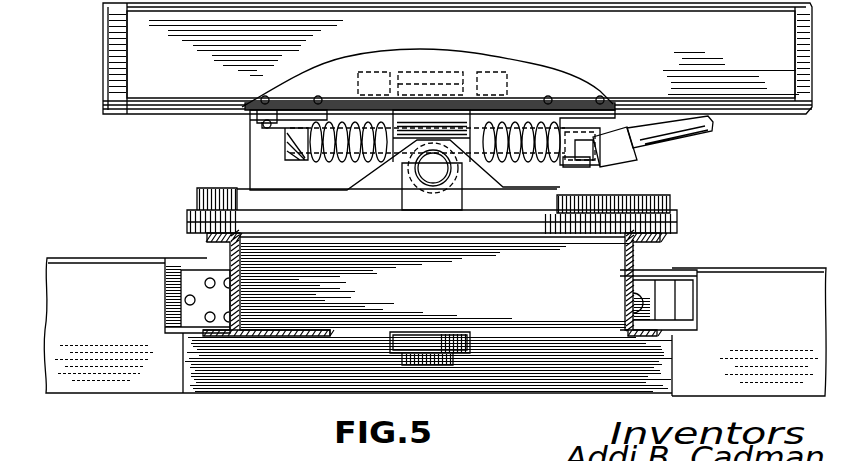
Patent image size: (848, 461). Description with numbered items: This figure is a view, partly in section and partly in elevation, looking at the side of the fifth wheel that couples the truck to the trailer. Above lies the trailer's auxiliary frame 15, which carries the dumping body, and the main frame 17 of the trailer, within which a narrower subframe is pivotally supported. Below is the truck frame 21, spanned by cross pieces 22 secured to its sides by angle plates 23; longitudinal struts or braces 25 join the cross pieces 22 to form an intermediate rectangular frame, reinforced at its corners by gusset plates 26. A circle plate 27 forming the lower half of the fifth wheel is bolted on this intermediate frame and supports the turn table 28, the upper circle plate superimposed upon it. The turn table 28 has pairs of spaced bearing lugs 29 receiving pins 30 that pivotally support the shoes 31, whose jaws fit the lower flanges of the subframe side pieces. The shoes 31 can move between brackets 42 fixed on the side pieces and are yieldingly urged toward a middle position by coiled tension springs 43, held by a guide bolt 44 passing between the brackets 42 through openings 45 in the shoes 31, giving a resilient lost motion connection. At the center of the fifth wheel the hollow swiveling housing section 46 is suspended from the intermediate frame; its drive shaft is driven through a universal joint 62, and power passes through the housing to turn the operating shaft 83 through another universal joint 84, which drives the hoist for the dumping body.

The auxiliary frame 15 is at (167, 87).
The main frame of the trailer 17 is at (197, 109).
The truck frame 21 is at (120, 383).
The cross pieces 22 is at (242, 307).
The angle plates 23 is at (193, 280).
The longitudinal struts or braces 25 is at (517, 310).
The gusset plates 26 is at (222, 343).
The circle plate 27 is at (670, 232).
The turn table 28 is at (673, 223).
The bearing lugs 29 is at (505, 180).
The pins 30 is at (447, 173).
The shoes 31 is at (457, 73).
The brackets 42 is at (283, 120).
The coiled tension springs 43 is at (520, 113).
The guide bolt 44 is at (350, 160).
The openings 45 is at (353, 80).
The housing section 46 is at (465, 355).
The universal joint 62 is at (677, 302).
The operating shaft 83 is at (697, 137).
The universal joint 84 is at (613, 157).